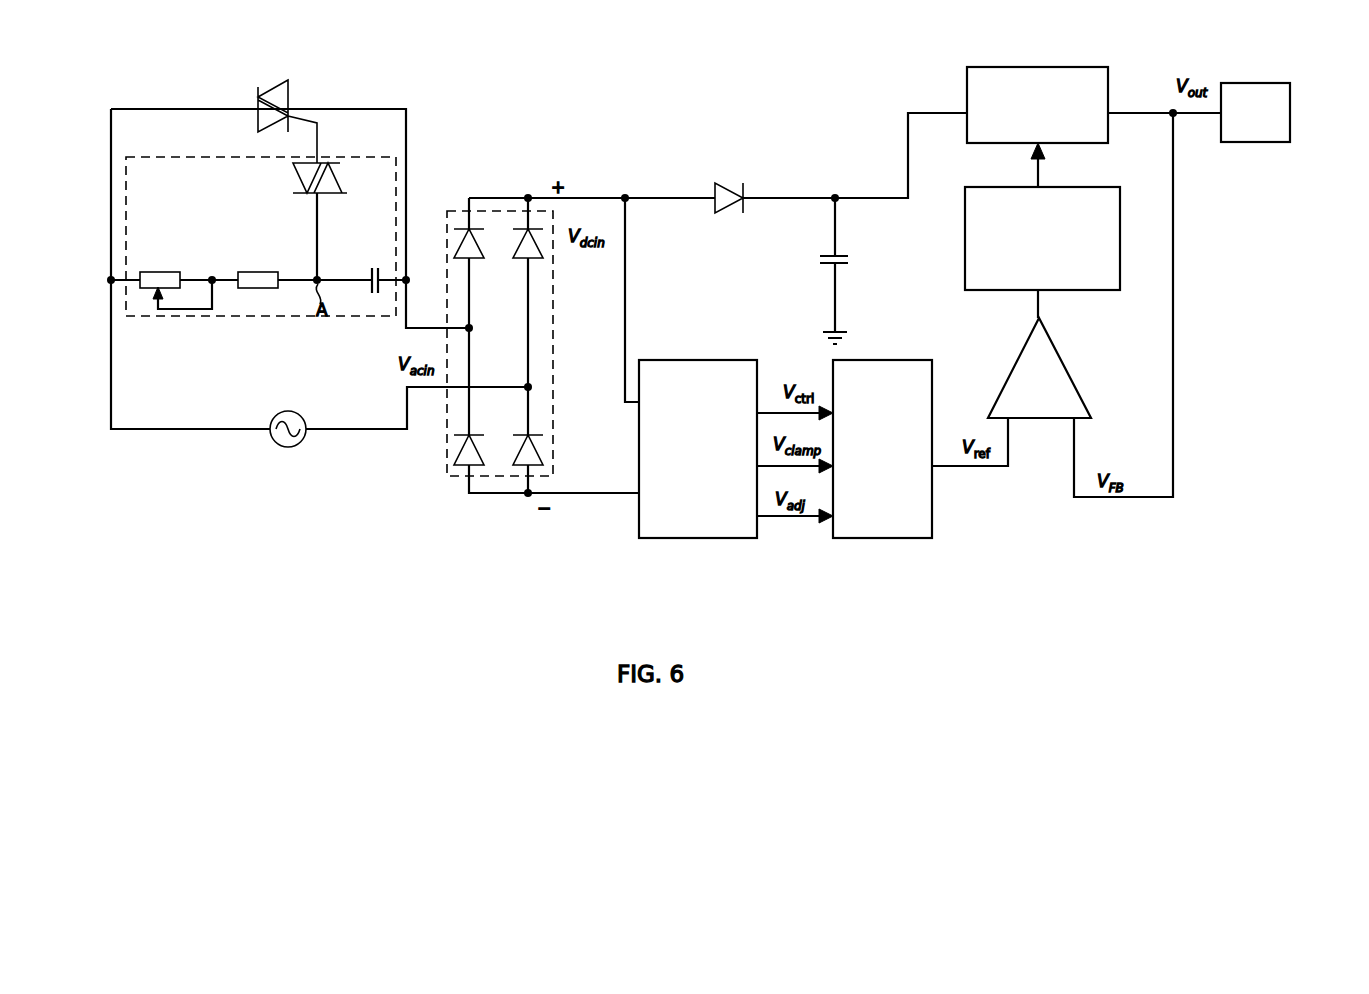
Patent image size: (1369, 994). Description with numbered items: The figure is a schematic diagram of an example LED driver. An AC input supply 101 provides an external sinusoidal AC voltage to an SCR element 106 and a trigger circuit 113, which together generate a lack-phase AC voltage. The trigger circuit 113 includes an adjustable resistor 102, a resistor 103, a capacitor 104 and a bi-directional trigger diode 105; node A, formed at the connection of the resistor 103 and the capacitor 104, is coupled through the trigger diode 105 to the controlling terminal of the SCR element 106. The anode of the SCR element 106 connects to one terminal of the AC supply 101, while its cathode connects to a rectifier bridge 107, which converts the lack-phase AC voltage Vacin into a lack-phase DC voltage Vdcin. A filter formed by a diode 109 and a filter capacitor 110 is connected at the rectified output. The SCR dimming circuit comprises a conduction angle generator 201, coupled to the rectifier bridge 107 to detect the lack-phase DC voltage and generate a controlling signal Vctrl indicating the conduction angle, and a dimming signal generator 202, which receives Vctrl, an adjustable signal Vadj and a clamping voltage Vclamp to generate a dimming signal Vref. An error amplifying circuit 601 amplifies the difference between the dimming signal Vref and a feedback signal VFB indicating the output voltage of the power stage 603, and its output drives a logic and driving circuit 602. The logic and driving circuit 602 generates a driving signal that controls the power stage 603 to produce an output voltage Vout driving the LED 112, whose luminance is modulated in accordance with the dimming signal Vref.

The AC input supply 101 is at (282, 411).
The adjustable resistor 102 is at (163, 272).
The resistor 103 is at (262, 272).
The capacitor 104 is at (368, 270).
The bi-directional trigger diode 105 is at (338, 184).
The SCR element 106 is at (282, 93).
The rectifier bridge 107 is at (553, 355).
The diode 109 is at (727, 183).
The filter capacitor 110 is at (848, 265).
The LED 112 is at (1255, 112).
The trigger circuit 113 is at (163, 185).
The conduction angle generator 201 is at (698, 449).
The dimming signal generator 202 is at (882, 449).
The error amplifying circuit 601 is at (1039, 368).
The logic and driving circuit 602 is at (1042, 238).
The power stage 603 is at (1037, 105).